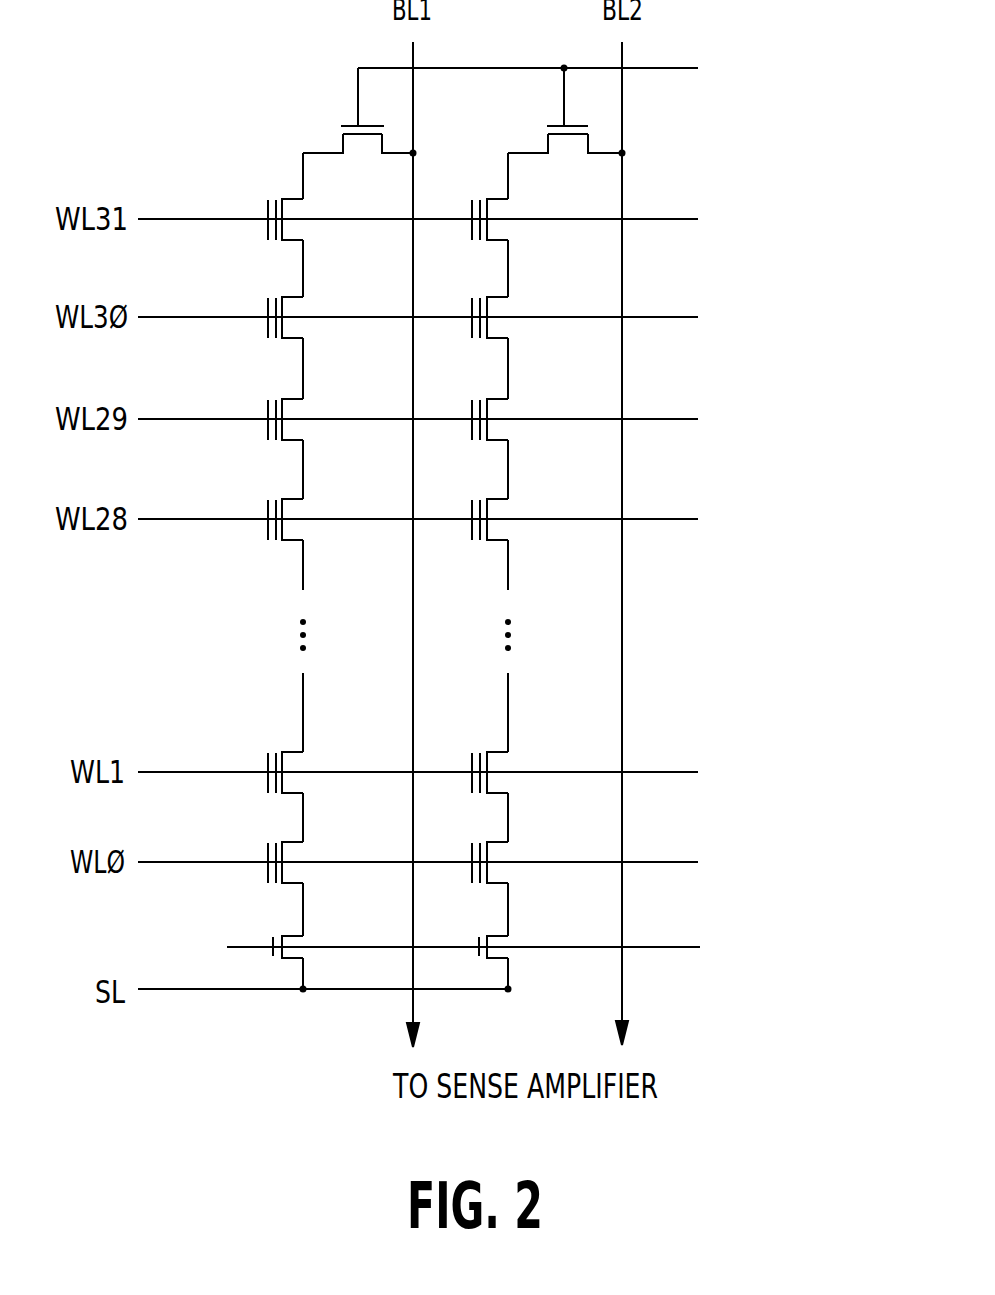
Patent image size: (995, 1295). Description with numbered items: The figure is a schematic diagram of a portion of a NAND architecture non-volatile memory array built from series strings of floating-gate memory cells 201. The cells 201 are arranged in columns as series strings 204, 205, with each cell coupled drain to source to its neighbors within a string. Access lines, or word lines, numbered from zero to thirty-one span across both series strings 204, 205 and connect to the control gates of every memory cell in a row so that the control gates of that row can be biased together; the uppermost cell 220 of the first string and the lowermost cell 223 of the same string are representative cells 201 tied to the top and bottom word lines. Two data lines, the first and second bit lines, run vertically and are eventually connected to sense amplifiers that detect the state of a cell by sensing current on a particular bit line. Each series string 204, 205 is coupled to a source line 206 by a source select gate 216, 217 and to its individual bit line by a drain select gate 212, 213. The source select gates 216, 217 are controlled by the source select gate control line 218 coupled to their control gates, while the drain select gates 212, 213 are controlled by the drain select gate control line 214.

The non-volatile memory cells 201 is at (233, 118).
The series string 204 is at (303, 989).
The series string 205 is at (508, 989).
The source line 206 is at (138, 1002).
The drain select gate 212 is at (340, 123).
The drain select gate 213 is at (547, 124).
The drain select gate control line SG(D) 214 is at (680, 65).
The source select gate 216 is at (282, 963).
The source select gate 217 is at (490, 967).
The source select gate control line SG(S) 218 is at (682, 942).
The memory cell coupled to word line WL31 220 is at (270, 247).
The memory cell coupled to word line WL0 223 is at (267, 887).